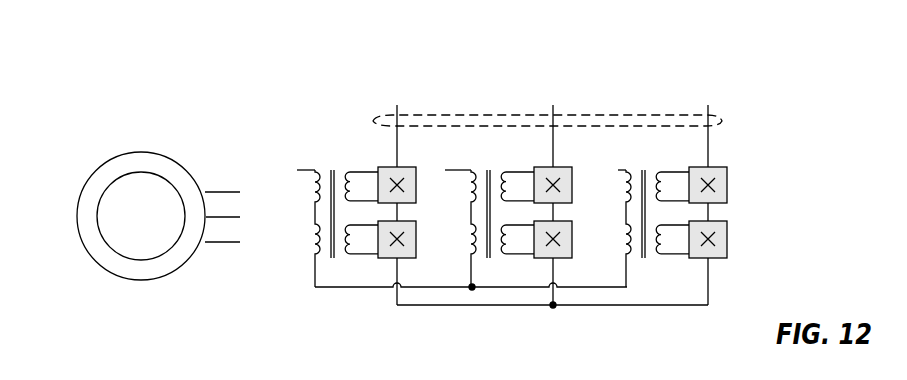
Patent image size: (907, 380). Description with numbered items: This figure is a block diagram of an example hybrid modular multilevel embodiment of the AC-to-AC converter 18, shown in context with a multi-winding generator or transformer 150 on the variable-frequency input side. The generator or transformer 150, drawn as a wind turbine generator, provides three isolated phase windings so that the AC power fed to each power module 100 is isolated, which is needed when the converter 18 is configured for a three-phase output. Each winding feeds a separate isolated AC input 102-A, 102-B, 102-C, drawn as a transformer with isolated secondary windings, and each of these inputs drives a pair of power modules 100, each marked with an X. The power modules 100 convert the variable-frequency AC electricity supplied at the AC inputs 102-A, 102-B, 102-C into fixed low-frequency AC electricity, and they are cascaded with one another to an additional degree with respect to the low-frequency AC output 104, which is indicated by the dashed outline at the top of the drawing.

The AC-to-AC converter 18 is at (276, 78).
The multi-winding generator or transformer 150 is at (124, 278).
The power module 100 is at (562, 205).
The AC input 102-A is at (297, 170).
The AC input 102-B is at (445, 170).
The AC input 102-C is at (618, 170).
The AC output 104 is at (722, 121).